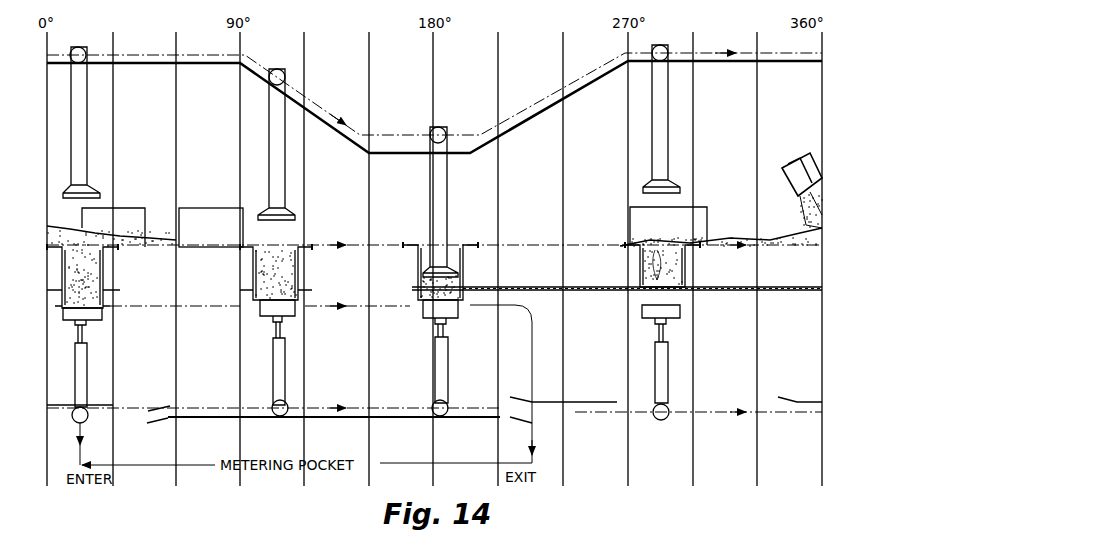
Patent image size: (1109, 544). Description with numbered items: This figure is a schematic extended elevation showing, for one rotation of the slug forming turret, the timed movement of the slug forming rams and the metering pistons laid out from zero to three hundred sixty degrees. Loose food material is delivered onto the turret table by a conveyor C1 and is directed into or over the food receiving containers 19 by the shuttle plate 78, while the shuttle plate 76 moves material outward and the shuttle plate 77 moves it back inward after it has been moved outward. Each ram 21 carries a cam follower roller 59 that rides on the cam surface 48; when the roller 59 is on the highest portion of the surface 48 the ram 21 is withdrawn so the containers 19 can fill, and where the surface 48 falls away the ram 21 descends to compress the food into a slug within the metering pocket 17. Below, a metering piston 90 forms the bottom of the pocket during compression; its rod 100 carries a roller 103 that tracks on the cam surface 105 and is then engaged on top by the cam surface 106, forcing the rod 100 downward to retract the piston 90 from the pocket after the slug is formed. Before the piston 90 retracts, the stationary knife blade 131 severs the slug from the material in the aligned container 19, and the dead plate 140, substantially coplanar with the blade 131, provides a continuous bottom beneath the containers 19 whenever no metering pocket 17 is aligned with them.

The cam surface 48 is at (190, 66).
The cam follower roller 59 is at (84, 50).
The ram 21 is at (100, 110).
The shuttle plate 78 is at (130, 209).
The shuttle plate 76 is at (230, 209).
The shuttle plate 77 is at (676, 227).
The food receiving container 19 is at (104, 268).
The knife blade 131 is at (421, 280).
The metering pocket 17 is at (106, 300).
The dead plate 140 is at (618, 286).
The metering piston 90 is at (268, 312).
The metering piston rod 100 is at (88, 378).
The roller member 103 is at (273, 404).
The cam surface 105 is at (200, 418).
The cam surface 106 is at (580, 402).
The conveyor C1 is at (787, 183).